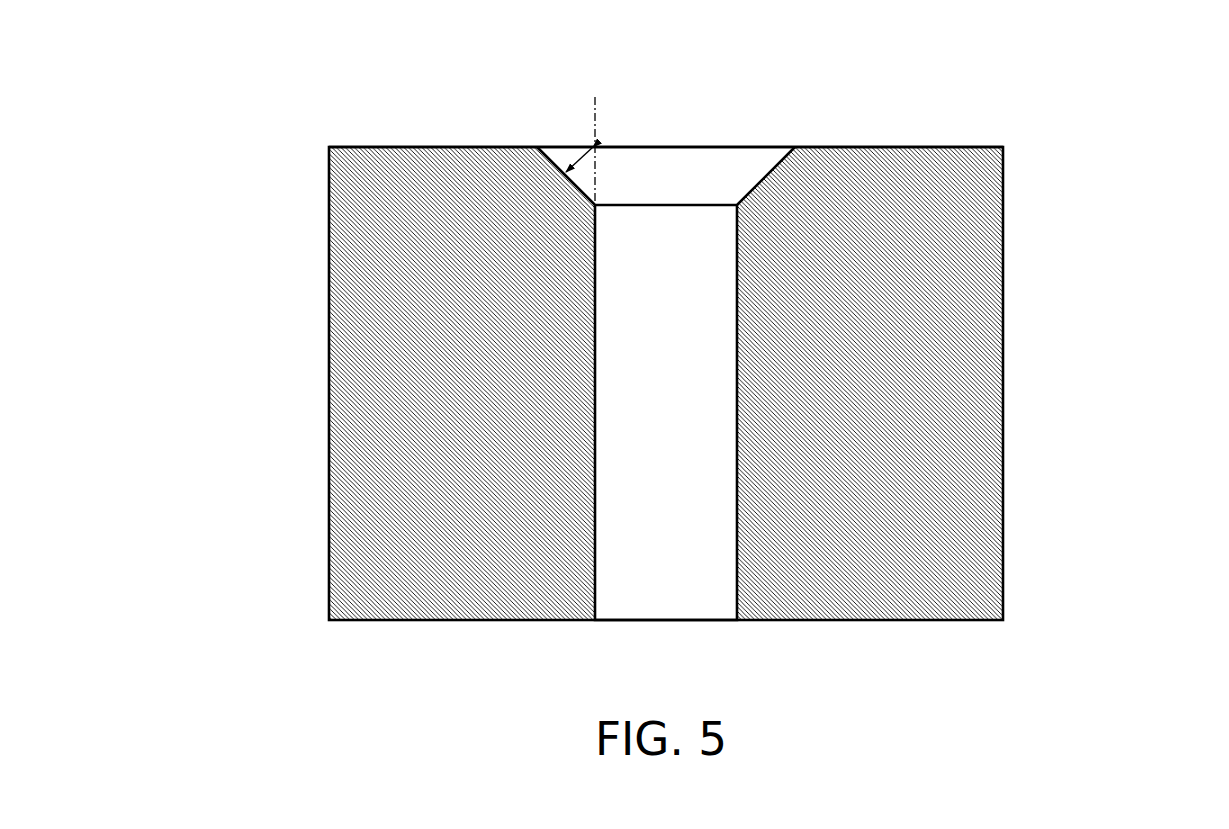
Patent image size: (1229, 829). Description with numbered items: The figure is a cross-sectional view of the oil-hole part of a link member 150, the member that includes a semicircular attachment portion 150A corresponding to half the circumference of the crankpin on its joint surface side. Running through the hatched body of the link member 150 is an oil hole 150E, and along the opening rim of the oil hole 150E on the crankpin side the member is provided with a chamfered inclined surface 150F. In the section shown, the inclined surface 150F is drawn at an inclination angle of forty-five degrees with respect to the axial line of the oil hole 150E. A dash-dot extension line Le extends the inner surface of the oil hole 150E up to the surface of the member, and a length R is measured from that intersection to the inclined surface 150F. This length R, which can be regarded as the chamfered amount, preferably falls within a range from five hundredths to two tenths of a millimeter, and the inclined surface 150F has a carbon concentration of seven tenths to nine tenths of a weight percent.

The link member 150 is at (325, 264).
The attachment portion 150A is at (863, 147).
The inclined surface 150F is at (713, 170).
The oil hole 150E is at (685, 381).
The length R is at (578, 156).
The extension line Le is at (594, 118).